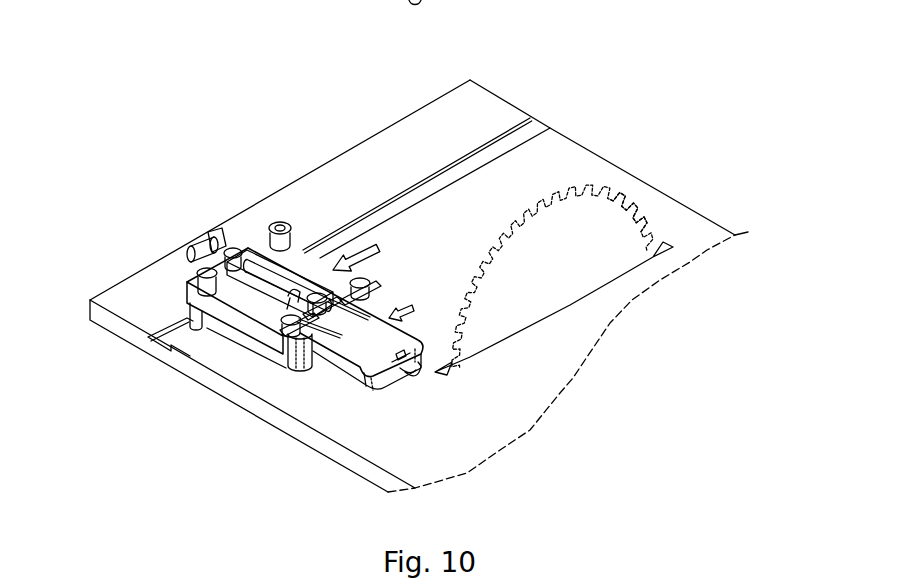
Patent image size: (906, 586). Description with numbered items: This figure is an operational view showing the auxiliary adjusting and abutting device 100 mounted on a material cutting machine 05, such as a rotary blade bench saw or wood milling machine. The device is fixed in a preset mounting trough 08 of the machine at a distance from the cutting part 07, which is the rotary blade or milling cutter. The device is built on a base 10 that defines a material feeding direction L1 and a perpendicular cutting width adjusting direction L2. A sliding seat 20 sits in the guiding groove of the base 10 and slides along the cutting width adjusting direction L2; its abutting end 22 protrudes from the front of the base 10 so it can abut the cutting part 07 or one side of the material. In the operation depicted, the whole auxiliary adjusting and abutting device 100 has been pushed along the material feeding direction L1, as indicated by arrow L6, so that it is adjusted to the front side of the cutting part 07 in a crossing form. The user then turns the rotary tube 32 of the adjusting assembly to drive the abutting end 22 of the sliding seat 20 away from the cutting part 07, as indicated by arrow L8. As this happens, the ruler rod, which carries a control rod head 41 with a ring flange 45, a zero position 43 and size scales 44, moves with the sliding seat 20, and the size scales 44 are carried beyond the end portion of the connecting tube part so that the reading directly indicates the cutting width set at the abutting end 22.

The auxiliary adjusting and abutting device 100 is at (262, 304).
The mounting trough 08 is at (465, 167).
The material cutting machine 05 is at (574, 168).
The cutting part 07 is at (629, 199).
The base 10 is at (240, 338).
The sliding seat 20 is at (334, 371).
The abutting end 22 is at (412, 358).
The rotary tube 32 is at (270, 277).
The control rod head 41 is at (194, 244).
The zero position 43 is at (213, 235).
The size scales 44 is at (206, 269).
The ring flange 45 is at (233, 238).
The material feeding direction L1 is at (215, 73).
The cutting width adjusting direction L2 is at (215, 73).
The arrow L6 is at (345, 255).
The arrow L8 is at (397, 312).